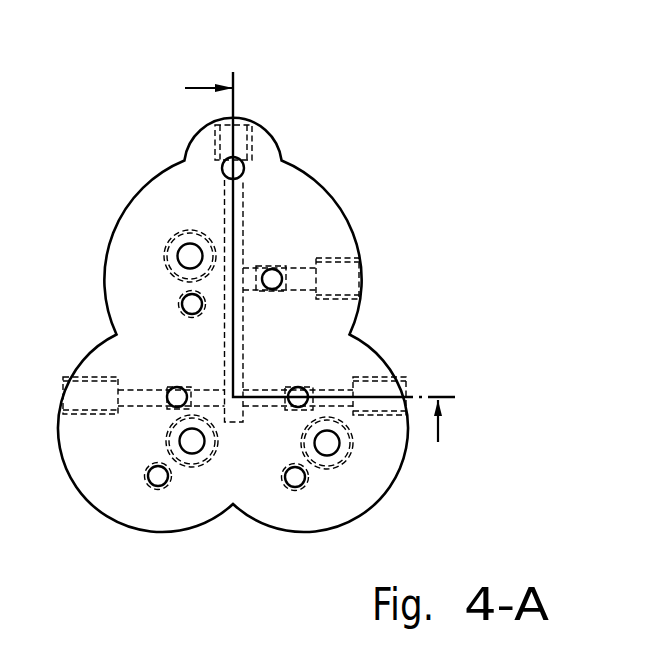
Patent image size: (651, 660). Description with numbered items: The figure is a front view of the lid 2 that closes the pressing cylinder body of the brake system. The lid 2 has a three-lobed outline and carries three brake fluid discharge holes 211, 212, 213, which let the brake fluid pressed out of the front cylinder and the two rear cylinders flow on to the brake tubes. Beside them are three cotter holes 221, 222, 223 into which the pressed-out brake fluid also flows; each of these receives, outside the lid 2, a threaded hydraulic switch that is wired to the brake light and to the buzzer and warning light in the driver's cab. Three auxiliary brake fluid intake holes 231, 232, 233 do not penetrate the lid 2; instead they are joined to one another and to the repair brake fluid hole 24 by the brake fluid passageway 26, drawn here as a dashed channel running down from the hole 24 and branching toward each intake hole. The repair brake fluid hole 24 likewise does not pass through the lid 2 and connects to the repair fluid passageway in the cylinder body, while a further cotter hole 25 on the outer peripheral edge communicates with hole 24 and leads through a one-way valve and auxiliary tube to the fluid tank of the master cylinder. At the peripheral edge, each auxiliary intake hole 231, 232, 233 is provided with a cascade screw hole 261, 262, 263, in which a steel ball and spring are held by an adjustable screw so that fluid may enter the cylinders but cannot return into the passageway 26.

The lid 2 is at (158, 158).
The repair brake fluid hole 24 is at (248, 161).
The cotter hole 25 is at (238, 130).
The brake fluid passageway 26 is at (238, 250).
The brake fluid discharge hole 211 is at (190, 253).
The brake fluid discharge hole 212 is at (193, 445).
The brake fluid discharge hole 213 is at (327, 445).
The cotter hole 221 is at (190, 302).
The cotter hole 222 is at (157, 479).
The cotter hole 223 is at (295, 480).
The auxiliary brake fluid intake hole 231 is at (275, 276).
The auxiliary brake fluid intake hole 232 is at (176, 401).
The auxiliary brake fluid intake hole 233 is at (298, 394).
The cascade screw hole 261 is at (340, 280).
The cascade screw hole 262 is at (80, 395).
The cascade screw hole 263 is at (385, 397).